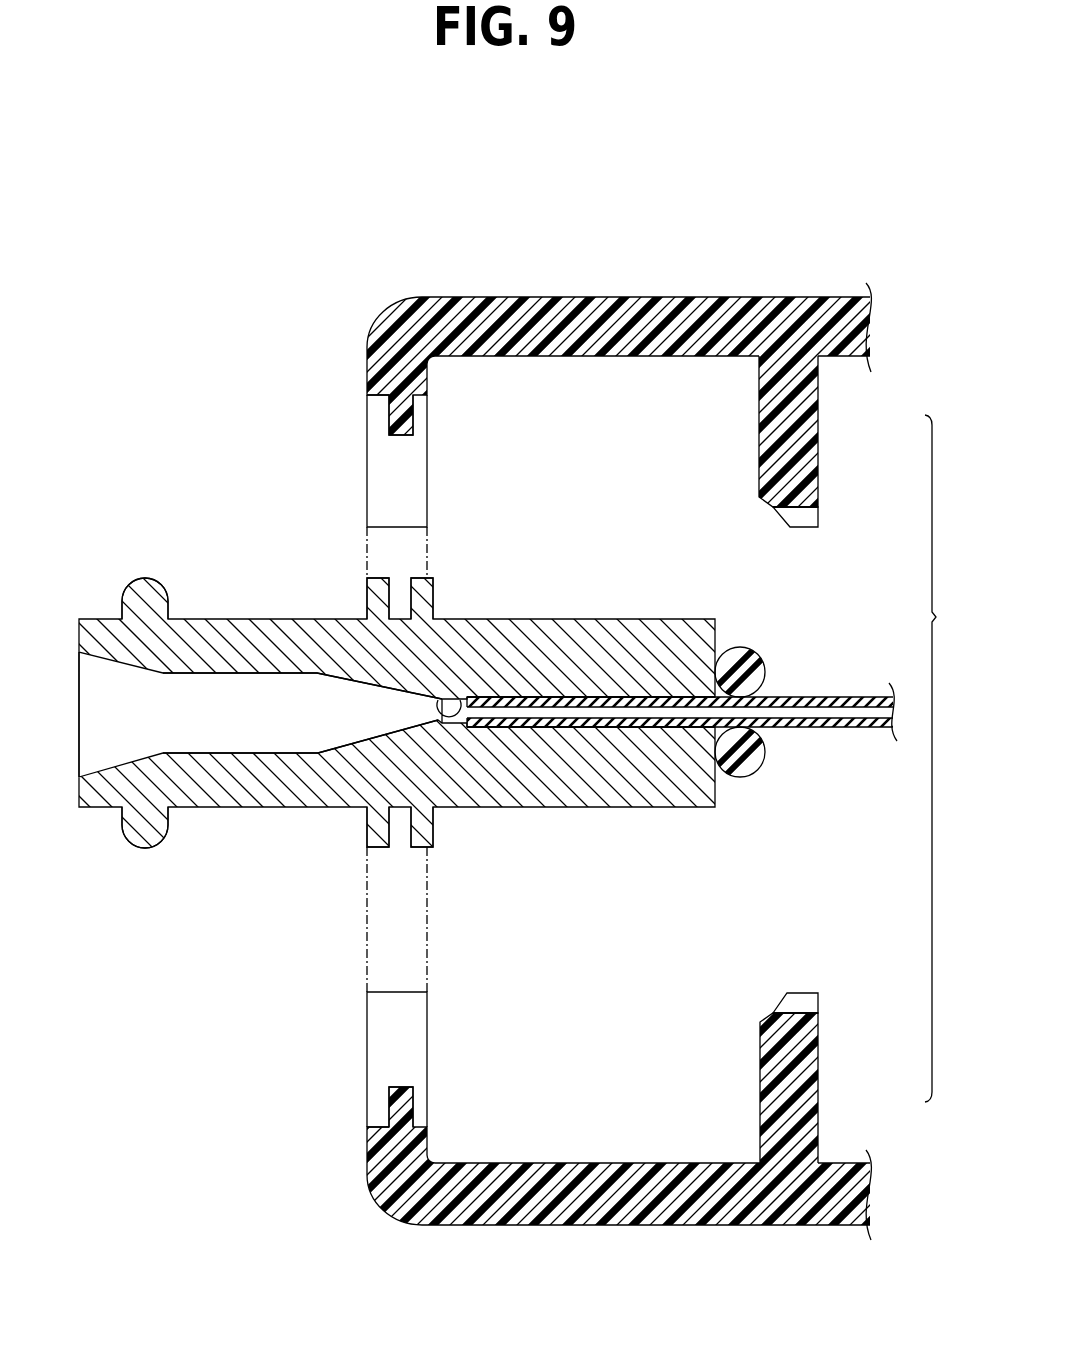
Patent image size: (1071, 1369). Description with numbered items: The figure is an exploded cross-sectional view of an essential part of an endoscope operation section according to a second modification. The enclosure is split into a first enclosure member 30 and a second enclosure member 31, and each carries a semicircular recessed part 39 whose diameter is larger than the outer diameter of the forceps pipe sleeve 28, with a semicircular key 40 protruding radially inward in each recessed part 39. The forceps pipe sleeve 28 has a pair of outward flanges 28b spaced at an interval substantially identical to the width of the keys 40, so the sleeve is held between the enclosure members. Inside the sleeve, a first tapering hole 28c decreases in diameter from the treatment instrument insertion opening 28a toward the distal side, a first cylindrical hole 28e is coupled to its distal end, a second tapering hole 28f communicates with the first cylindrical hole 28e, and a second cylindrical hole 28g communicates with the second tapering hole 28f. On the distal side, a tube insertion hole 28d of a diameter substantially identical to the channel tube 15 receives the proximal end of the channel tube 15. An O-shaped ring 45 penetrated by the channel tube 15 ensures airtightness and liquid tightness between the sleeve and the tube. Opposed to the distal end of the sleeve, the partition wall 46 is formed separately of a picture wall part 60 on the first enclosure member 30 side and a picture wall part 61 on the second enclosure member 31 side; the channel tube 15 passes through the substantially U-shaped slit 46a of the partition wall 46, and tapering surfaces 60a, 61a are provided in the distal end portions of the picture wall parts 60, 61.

The second enclosure member 31 is at (545, 297).
The first enclosure member 30 is at (545, 1225).
The partition wall 46 is at (949, 758).
The picture wall part 61 is at (818, 423).
The picture wall part 60 is at (820, 1096).
The slit 46a is at (802, 508).
The tapering surface 61a is at (775, 525).
The tapering surface 60a is at (780, 993).
The recessed part 39 is at (378, 400).
The key 40 is at (402, 435).
The forceps pipe sleeve 28 is at (218, 841).
The treatment instrument insertion opening 28a is at (80, 650).
The outward flange 28b is at (423, 850).
The first tapering hole 28c is at (150, 667).
The tube insertion hole 28d is at (607, 699).
The first cylindrical hole 28e is at (249, 673).
The second tapering hole 28f is at (357, 682).
The second cylindrical hole 28g is at (458, 699).
The O-shaped ring 45 is at (747, 647).
The channel tube 15 is at (823, 697).